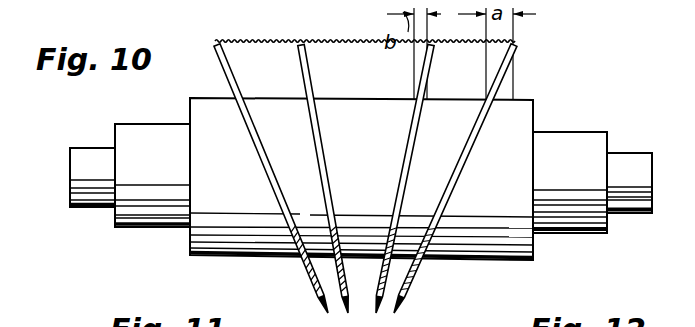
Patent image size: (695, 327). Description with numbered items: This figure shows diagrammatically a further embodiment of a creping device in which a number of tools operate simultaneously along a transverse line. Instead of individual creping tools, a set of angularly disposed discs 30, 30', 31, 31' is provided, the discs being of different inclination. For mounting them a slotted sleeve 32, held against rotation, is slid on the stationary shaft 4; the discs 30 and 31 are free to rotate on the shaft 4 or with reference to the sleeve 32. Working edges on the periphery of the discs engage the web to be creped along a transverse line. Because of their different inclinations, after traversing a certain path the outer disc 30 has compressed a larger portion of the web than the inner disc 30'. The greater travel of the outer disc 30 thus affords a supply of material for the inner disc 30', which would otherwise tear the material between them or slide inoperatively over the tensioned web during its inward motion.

The stationary shaft 4 is at (140, 210).
The disc 30 is at (455, 178).
The disc 30' is at (418, 178).
The disc 31 is at (271, 178).
The disc 31' is at (312, 178).
The slotted sleeve 32 is at (251, 237).